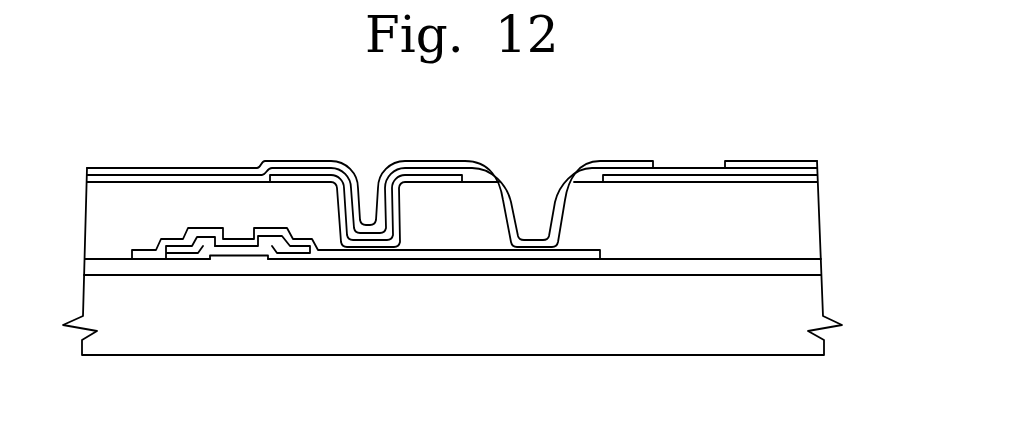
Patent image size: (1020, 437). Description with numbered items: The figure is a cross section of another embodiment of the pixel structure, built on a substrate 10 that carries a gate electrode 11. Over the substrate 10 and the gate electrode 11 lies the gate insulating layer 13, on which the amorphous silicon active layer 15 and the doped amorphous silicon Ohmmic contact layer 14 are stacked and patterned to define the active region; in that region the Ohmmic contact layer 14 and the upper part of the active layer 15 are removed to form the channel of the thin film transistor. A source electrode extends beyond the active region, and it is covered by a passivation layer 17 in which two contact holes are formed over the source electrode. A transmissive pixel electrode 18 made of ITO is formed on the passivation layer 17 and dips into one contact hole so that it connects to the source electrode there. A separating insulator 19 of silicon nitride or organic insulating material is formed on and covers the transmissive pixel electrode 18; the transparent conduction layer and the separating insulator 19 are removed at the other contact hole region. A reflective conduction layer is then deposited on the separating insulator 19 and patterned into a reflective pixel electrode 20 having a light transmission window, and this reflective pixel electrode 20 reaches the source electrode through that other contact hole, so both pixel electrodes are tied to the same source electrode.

The substrate 10 is at (800, 297).
The gate electrode 11 is at (240, 263).
The gate insulating layer 13 is at (800, 265).
The Ohmmic contact layer 14 is at (183, 250).
The active layer 15 is at (300, 253).
The passivation layer 17 is at (800, 220).
The transmissive pixel electrode 18 is at (800, 175).
The separating insulator 19 is at (803, 170).
The reflective pixel electrode 20 is at (805, 158).